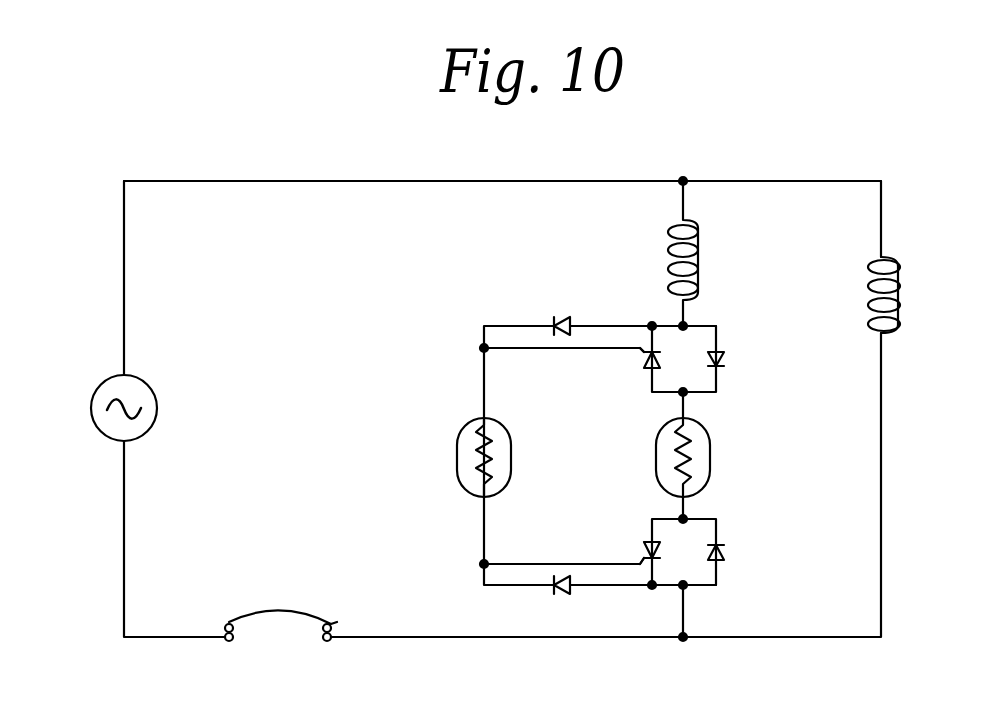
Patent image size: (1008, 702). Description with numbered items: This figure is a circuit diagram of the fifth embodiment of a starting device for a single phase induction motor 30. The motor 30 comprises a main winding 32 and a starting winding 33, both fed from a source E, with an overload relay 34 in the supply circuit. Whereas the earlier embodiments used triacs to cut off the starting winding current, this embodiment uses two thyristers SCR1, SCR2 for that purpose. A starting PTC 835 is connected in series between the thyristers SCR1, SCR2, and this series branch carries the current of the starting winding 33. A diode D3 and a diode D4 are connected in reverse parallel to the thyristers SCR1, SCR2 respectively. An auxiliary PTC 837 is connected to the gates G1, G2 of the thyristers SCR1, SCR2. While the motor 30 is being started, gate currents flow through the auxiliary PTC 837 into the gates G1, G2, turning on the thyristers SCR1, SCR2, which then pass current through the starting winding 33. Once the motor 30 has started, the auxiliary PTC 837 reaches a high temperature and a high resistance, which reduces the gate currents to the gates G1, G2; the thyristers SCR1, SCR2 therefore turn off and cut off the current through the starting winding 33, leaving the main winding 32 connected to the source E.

The single phase induction motor 30 is at (779, 181).
The main winding 32 is at (868, 279).
The starting winding 33 is at (699, 262).
The overload relay 34 is at (256, 612).
The source E is at (103, 386).
The starting PTC 835 is at (710, 455).
The auxiliary PTC 837 is at (457, 460).
The thyrister SCR1 is at (648, 368).
The thyrister SCR2 is at (646, 545).
The gate G1 is at (645, 362).
The gate G2 is at (644, 557).
The diode D3 is at (724, 355).
The diode D4 is at (728, 552).